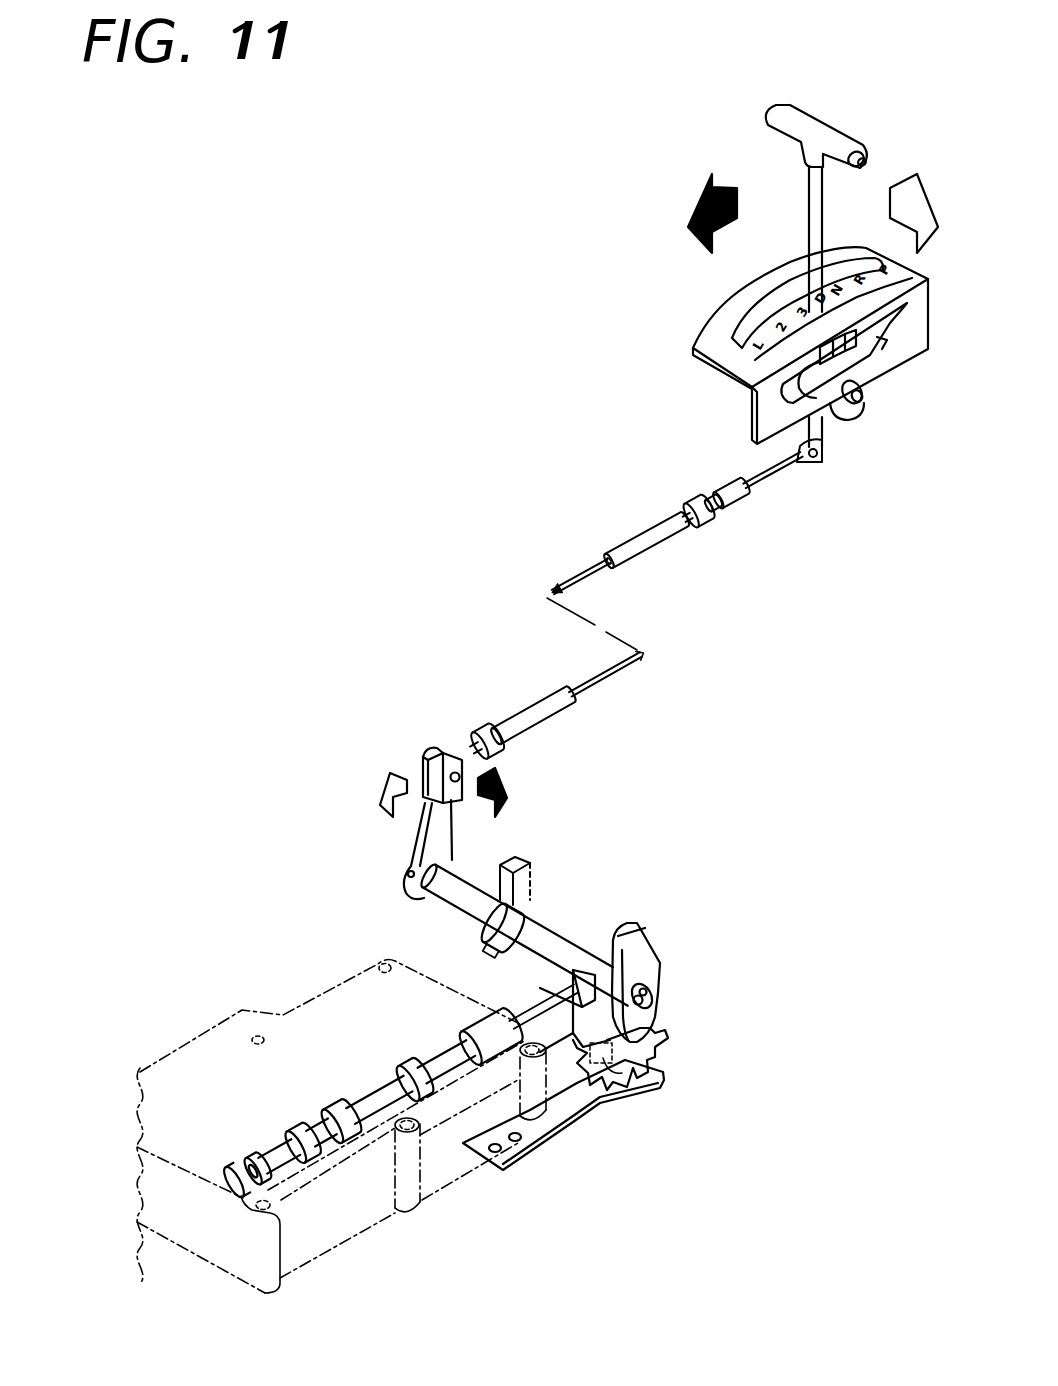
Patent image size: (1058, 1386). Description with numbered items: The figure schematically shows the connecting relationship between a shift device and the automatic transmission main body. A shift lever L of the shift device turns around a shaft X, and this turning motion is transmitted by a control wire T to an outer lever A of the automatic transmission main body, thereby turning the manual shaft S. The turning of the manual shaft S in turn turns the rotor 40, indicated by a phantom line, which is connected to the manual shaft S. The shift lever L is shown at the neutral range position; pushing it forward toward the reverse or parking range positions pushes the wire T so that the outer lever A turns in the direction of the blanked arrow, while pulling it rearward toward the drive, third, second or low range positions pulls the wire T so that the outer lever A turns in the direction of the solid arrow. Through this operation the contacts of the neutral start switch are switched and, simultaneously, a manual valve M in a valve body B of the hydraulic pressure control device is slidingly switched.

The shift lever L is at (810, 184).
The shaft X is at (858, 402).
The control wire T is at (594, 625).
The outer lever A is at (422, 835).
The rotor 40 is at (528, 874).
The manual shaft S is at (565, 938).
The manual valve M is at (537, 1003).
The valve body B is at (337, 1230).